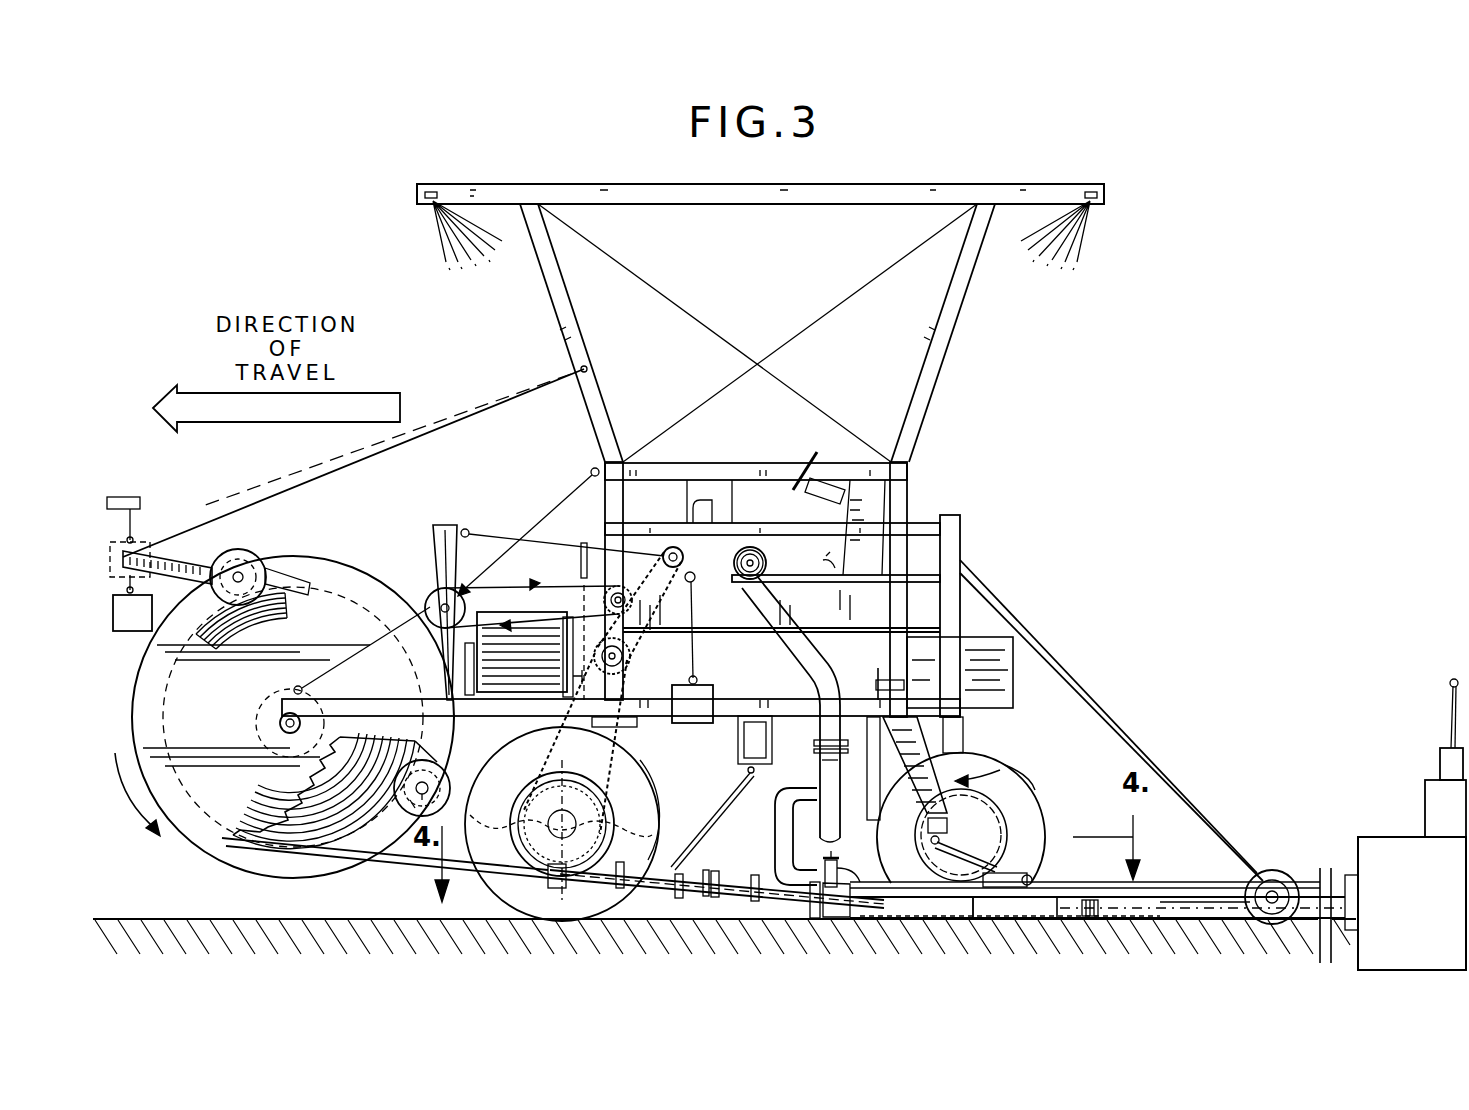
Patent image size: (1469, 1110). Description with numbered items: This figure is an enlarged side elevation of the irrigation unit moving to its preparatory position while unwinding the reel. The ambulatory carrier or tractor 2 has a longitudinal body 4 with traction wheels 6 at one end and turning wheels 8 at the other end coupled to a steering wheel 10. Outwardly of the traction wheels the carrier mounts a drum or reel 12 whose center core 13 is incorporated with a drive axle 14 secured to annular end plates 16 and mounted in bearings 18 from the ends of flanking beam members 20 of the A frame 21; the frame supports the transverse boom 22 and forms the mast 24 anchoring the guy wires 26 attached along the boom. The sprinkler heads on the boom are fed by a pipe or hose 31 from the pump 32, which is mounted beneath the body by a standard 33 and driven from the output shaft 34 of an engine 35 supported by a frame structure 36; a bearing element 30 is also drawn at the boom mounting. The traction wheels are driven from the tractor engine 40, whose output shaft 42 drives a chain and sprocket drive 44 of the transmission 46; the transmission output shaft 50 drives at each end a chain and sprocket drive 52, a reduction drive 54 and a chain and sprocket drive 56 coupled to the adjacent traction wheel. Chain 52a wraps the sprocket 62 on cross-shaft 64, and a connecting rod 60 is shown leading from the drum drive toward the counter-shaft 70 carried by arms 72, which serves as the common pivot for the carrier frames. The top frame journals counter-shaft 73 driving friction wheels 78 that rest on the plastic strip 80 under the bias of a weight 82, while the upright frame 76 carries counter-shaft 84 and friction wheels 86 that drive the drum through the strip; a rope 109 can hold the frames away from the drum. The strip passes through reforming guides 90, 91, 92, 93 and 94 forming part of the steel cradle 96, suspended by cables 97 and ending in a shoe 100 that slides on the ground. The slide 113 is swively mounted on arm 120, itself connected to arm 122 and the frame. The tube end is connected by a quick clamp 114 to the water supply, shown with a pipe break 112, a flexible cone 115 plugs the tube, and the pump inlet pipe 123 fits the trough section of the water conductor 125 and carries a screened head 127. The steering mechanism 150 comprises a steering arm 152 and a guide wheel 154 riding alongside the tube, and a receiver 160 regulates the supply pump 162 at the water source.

The ambulatory carrier or tractor 2 is at (975, 505).
The longitudinal body 4 is at (735, 640).
The traction wheels 6 is at (650, 790).
The turning wheels 8 is at (1018, 785).
The steering wheel 10 is at (806, 448).
The drum or reel 12 is at (353, 560).
The center core 13 is at (256, 690).
The drive axle 14 is at (280, 724).
The annular end plates 16 is at (310, 578).
The bearings 18 is at (262, 772).
The beam members 20 is at (373, 698).
The carrier or mounting A frame 21 is at (585, 500).
The transverse boom 22 is at (755, 545).
The mast 24 is at (935, 328).
The guy wires 26 is at (425, 236).
The bearing 30 is at (768, 566).
The pipe or hose 31 is at (826, 650).
The pump 32 is at (818, 760).
The standard 33 is at (814, 740).
The output shaft 34 is at (885, 678).
The engine 35 is at (1000, 650).
The frame structure 36 is at (965, 735).
The tractor engine 40 is at (518, 652).
The output shaft 42 is at (530, 720).
The chain and sprocket drive 44 is at (575, 590).
The transmission 46 is at (605, 555).
The output shaft 50 is at (690, 552).
The chain and sprocket drive 52 is at (642, 640).
The chain 52a is at (650, 548).
The reduction drive 54 is at (632, 664).
The chain and sprocket drive 56 is at (624, 736).
The rod 60 is at (472, 542).
The sprocket 62 is at (696, 580).
The cross-shaft 64 is at (694, 625).
The counter-shaft 70 is at (430, 600).
The arms 72 is at (442, 550).
The counter-shaft 73 is at (238, 572).
The upright frame 76 is at (142, 552).
The friction wheels 78 is at (215, 572).
The plastic strip 80 is at (410, 805).
The weight 82 is at (125, 632).
The counter-shaft 84 is at (422, 800).
The friction wheels 86 is at (412, 810).
The reforming guide 90 is at (620, 890).
The reforming guide 91 is at (707, 896).
The reforming guide 92 is at (714, 872).
The reforming guide 93 is at (756, 900).
The reforming guide 94 is at (814, 918).
The steel cradle 96 is at (834, 872).
The cables 97 is at (718, 828).
The shoe 100 is at (852, 908).
The rope 109 is at (475, 415).
The pipe break 112 is at (1325, 868).
The slide 113 is at (1040, 868).
The quick clamp 114 is at (1395, 838).
The cone 115 is at (1020, 918).
The arm 120 is at (1008, 812).
The arm 122 is at (1000, 762).
The inlet pipe 123 is at (775, 835).
The water conductor 125 is at (1205, 865).
The screened head 127 is at (1092, 918).
The steering mechanism 150 is at (1180, 755).
The steering arm 152 is at (1108, 708).
The guide wheel 154 is at (1272, 878).
The receiver 160 is at (1440, 760).
The supply pump 162 is at (1425, 802).